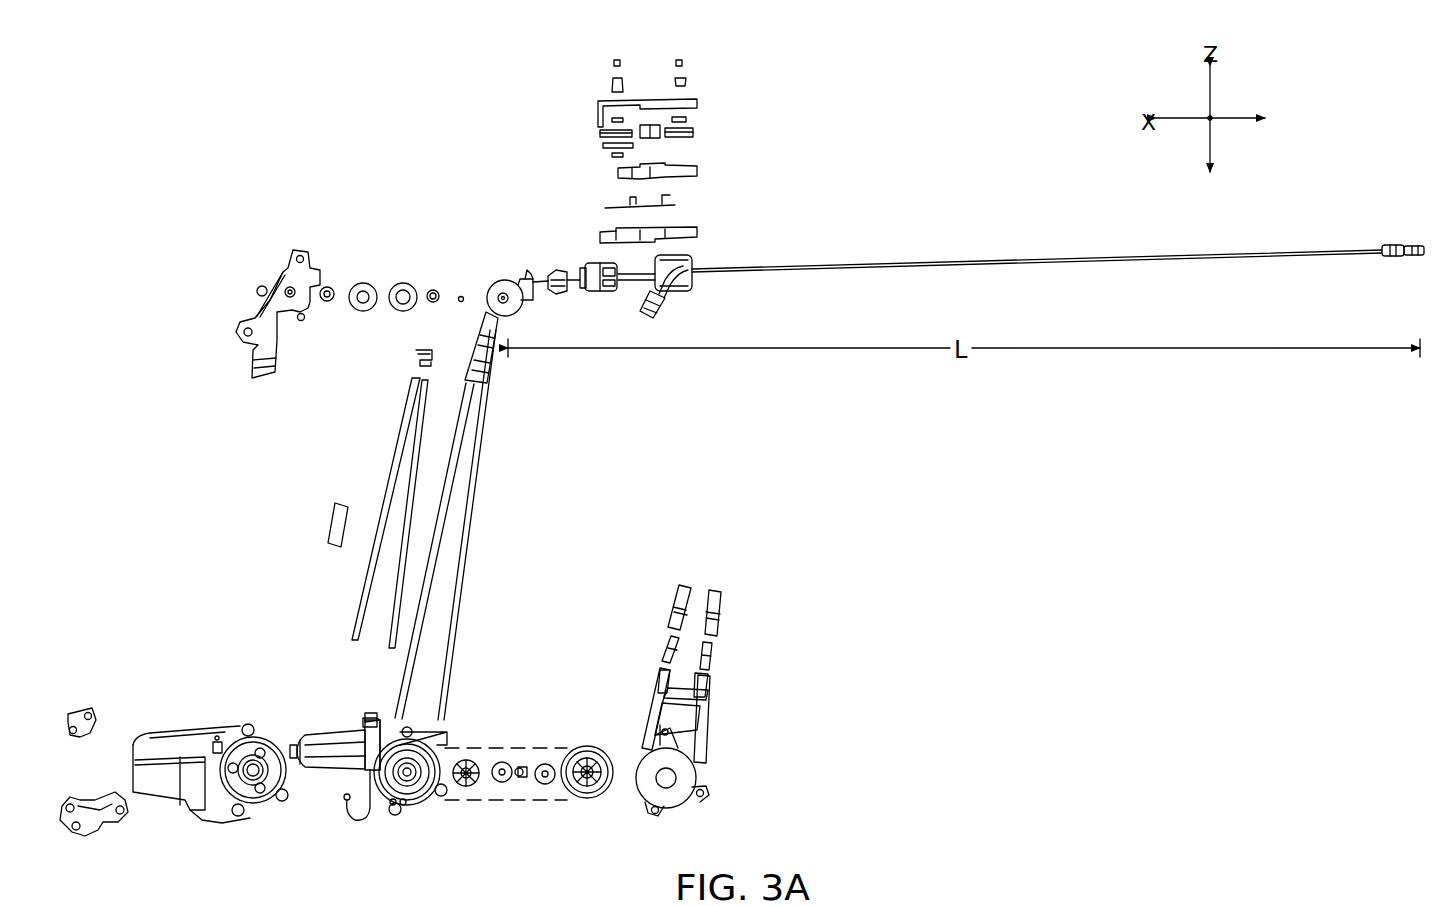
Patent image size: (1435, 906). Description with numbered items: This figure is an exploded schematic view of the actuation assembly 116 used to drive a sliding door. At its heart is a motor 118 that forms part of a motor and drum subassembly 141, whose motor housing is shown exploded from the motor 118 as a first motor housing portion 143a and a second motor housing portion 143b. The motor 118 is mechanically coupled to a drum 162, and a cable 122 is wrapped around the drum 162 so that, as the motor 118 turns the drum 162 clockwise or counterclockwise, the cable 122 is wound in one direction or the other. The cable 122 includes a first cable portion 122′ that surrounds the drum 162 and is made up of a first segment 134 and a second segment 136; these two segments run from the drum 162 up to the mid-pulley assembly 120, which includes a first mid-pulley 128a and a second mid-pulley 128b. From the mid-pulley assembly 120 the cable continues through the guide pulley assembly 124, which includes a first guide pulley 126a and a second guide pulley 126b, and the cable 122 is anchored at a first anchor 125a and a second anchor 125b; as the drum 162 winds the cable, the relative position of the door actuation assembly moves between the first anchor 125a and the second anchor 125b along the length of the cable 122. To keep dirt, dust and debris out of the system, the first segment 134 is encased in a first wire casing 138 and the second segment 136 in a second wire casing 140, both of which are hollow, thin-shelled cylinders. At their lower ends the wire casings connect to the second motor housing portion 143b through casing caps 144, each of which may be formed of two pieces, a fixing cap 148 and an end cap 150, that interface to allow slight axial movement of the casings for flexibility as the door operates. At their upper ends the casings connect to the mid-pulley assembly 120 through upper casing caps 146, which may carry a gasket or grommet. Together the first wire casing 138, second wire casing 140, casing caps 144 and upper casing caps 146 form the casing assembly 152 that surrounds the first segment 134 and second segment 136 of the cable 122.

The actuation assembly 116 is at (772, 470).
The motor 118 is at (322, 762).
The mid-pulley assembly 120 is at (484, 250).
The cable 122 is at (906, 215).
The first cable portion 122′ is at (497, 520).
The guide pulley assembly 124 is at (591, 100).
The first anchor 125a is at (1405, 240).
The second anchor 125b is at (670, 303).
The first guide pulley 126a is at (694, 132).
The second guide pulley 126b is at (601, 136).
The first mid-pulley 128a is at (363, 284).
The second mid-pulley 128b is at (405, 284).
The first segment 134 is at (398, 712).
The second segment 136 is at (447, 683).
The first wire casing 138 is at (358, 612).
The second wire casing 140 is at (390, 650).
The motor and drum subassembly 141 is at (150, 650).
The first motor housing portion 143a is at (178, 768).
The second motor housing portion 143b is at (690, 772).
The casing caps 144 is at (675, 580).
The upper casing caps 146 is at (387, 378).
The fixing cap 148 is at (670, 600).
The end cap 150 is at (662, 652).
The casing assembly 152 is at (853, 668).
The drum 162 is at (580, 745).